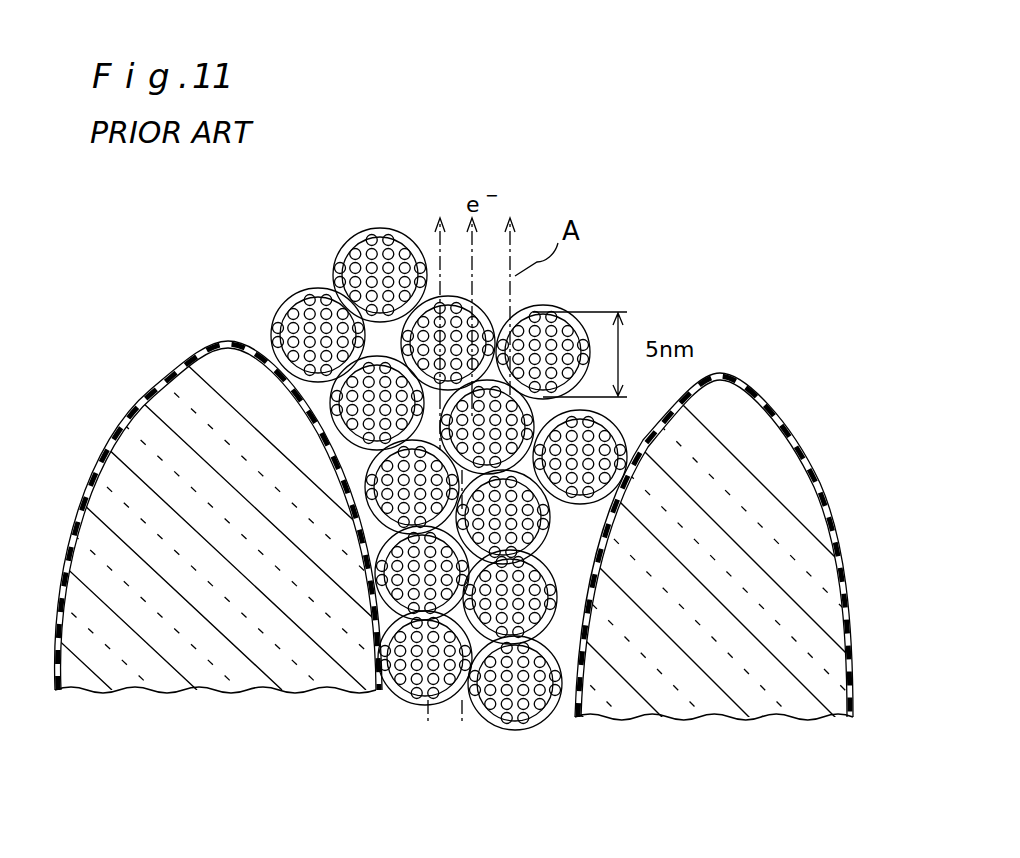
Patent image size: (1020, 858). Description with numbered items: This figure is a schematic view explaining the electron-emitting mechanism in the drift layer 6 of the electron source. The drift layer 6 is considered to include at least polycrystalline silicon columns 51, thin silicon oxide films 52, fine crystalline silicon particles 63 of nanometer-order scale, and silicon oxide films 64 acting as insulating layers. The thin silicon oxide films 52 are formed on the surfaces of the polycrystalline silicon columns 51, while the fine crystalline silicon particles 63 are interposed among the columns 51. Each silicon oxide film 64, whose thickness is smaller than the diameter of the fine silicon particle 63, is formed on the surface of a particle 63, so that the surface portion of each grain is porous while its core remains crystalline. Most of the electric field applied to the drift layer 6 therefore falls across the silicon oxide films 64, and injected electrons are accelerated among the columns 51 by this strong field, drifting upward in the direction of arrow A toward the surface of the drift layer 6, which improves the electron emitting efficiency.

The drift layer 6 is at (504, 526).
The polycrystalline silicon column 51 is at (175, 485).
The thin silicon oxide film 52 is at (110, 450).
The fine crystalline silicon particle 63 is at (290, 320).
The silicon oxide film 64 is at (300, 296).